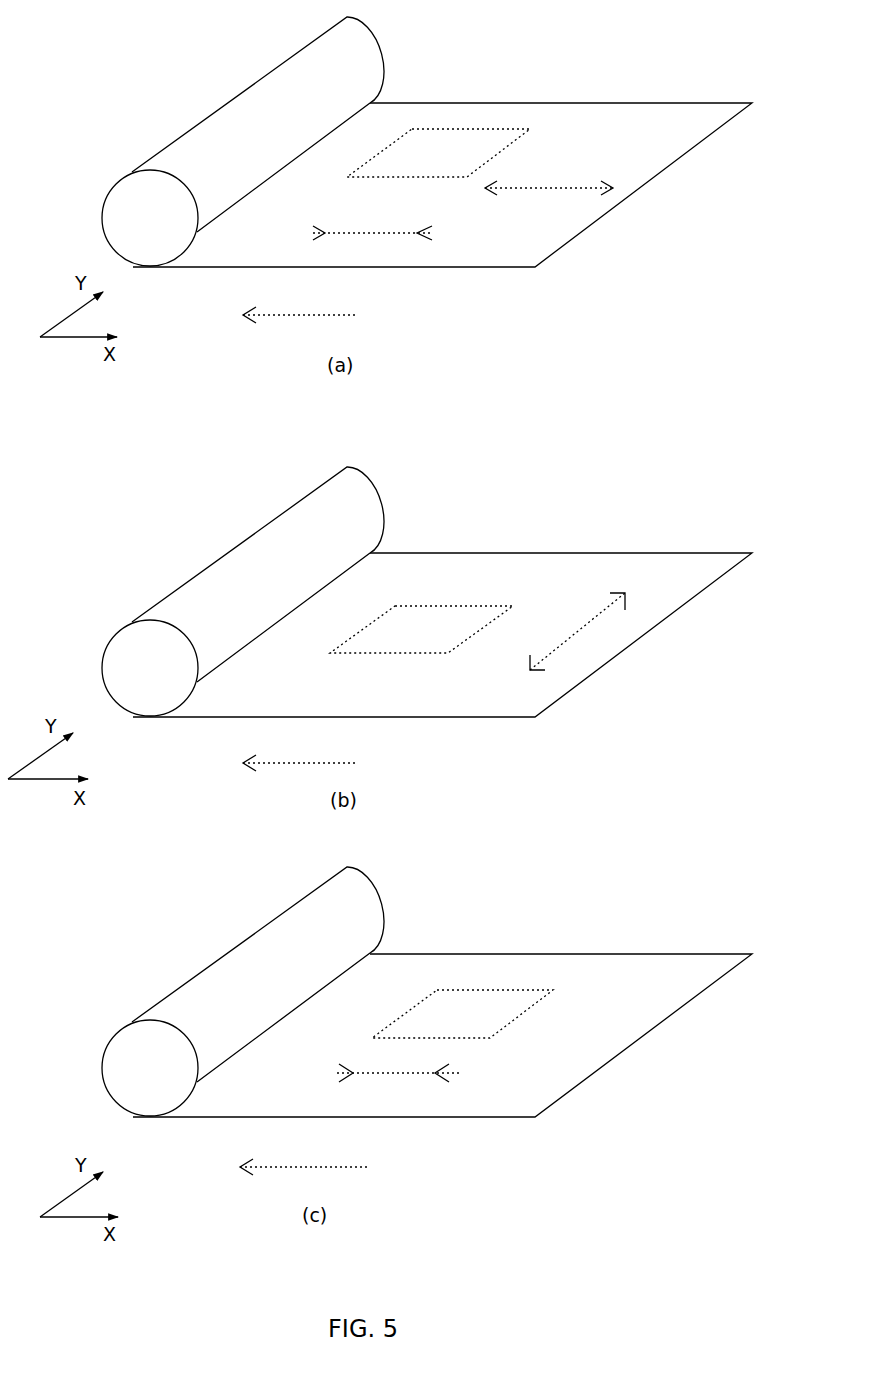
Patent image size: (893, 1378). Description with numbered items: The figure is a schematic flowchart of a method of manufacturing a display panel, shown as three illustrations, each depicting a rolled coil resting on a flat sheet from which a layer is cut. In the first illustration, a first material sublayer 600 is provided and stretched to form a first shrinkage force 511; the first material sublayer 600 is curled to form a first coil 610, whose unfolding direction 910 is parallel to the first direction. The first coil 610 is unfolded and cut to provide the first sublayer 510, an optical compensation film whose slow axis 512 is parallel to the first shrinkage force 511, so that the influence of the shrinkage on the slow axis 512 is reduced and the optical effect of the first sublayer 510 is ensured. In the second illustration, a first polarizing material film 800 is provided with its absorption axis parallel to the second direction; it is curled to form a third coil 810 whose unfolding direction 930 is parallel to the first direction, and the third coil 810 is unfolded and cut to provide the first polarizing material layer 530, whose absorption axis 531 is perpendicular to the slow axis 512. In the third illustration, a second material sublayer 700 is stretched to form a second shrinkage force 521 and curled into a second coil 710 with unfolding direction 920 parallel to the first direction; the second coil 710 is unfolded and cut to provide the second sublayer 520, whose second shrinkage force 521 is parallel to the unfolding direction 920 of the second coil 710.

The first coil 610 is at (228, 98).
The first material sublayer 600 is at (672, 102).
The first sublayer 510 is at (443, 127).
The first shrinkage force 511 is at (397, 233).
The slow axis 512 is at (548, 192).
The unfolding direction of the first coil 910 is at (328, 316).
The third coil 810 is at (193, 573).
The first polarizing material film 800 is at (703, 552).
The first polarizing material layer 530 is at (428, 603).
The absorption axis 531 is at (573, 643).
The unfolding direction of the third coil 930 is at (326, 763).
The second coil 710 is at (193, 970).
The second material sublayer 700 is at (690, 953).
The second sublayer 520 is at (460, 987).
The second shrinkage force 521 is at (400, 1075).
The unfolding direction of the second coil 920 is at (329, 1168).